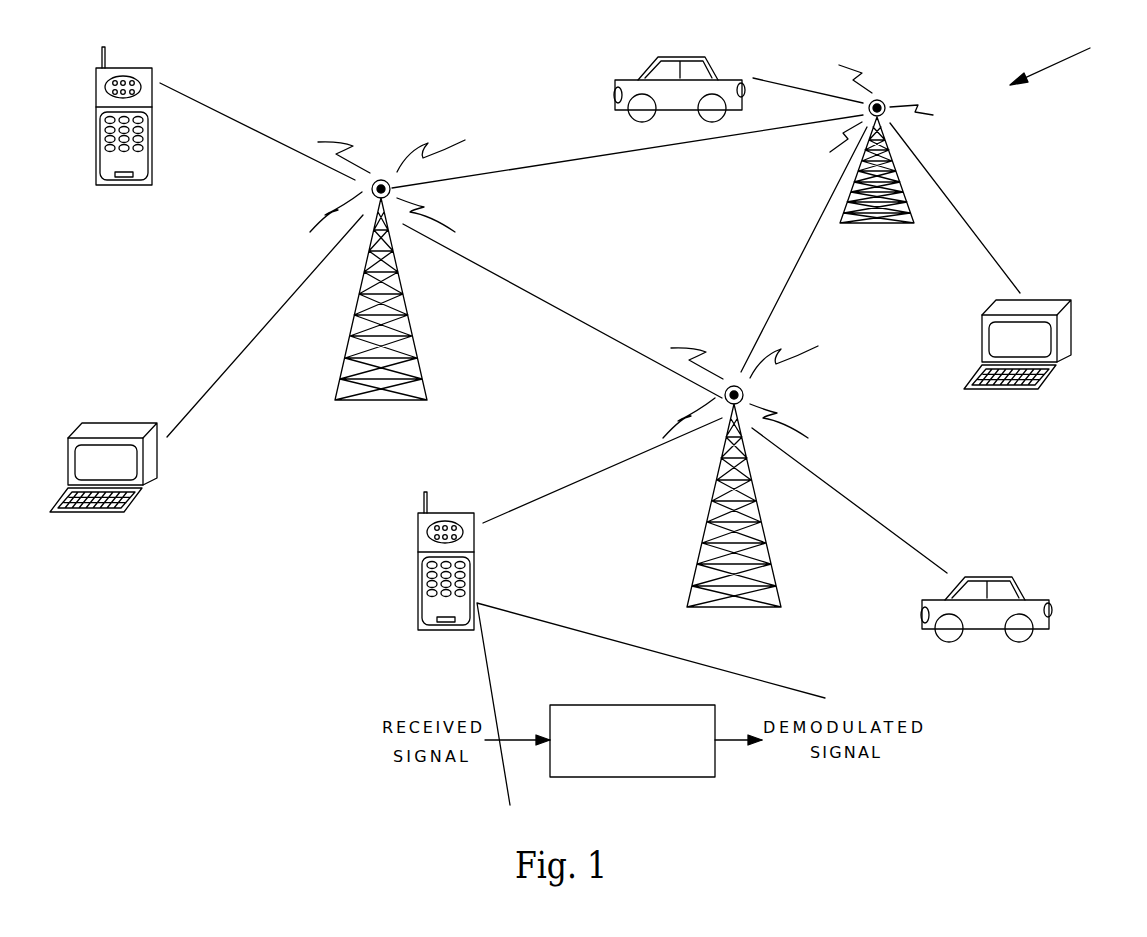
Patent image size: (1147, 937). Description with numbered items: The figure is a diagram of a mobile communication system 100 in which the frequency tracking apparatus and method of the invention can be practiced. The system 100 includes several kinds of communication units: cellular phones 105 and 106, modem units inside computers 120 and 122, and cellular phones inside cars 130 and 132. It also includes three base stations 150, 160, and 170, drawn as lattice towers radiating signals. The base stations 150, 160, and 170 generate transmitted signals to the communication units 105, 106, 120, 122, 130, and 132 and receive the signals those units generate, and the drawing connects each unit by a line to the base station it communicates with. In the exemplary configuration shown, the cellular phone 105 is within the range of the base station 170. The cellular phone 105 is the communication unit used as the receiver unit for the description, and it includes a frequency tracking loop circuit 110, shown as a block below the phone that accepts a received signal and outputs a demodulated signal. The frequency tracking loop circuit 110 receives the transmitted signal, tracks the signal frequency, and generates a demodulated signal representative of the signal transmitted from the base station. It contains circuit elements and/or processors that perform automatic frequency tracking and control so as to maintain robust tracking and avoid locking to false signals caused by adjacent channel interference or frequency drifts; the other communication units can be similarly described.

The system 100 is at (1069, 60).
The cellular phone 105 is at (418, 530).
The cellular phone 106 is at (142, 63).
The frequency tracking loop circuit 110 is at (601, 704).
The computer 120 is at (1038, 300).
The computer 122 is at (128, 422).
The car 130 is at (1002, 573).
The car 132 is at (657, 52).
The base station 150 is at (378, 173).
The base station 160 is at (878, 102).
The base station 170 is at (753, 381).